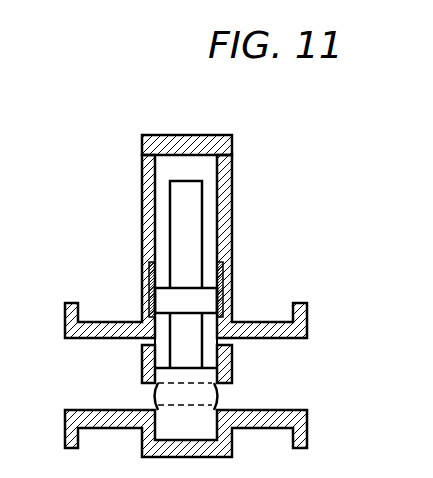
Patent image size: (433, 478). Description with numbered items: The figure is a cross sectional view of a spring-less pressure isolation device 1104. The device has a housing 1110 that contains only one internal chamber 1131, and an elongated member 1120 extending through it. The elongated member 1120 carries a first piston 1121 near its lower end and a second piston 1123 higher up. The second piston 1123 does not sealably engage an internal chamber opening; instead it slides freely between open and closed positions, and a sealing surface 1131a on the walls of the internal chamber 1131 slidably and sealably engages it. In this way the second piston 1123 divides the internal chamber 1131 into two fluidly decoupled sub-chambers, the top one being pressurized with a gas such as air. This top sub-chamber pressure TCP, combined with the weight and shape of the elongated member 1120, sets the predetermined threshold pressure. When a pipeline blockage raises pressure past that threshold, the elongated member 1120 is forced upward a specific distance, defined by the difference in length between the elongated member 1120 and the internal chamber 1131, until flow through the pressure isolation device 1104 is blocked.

The pressure isolation device 1104 is at (277, 128).
The housing 1110 is at (148, 124).
The internal chamber 1131 is at (203, 168).
The top sub-chamber pressure TCP is at (170, 170).
The sealing surface 1131a is at (217, 268).
The second piston 1123 is at (208, 300).
The elongated member 1120 is at (215, 352).
The first piston 1121 is at (175, 418).